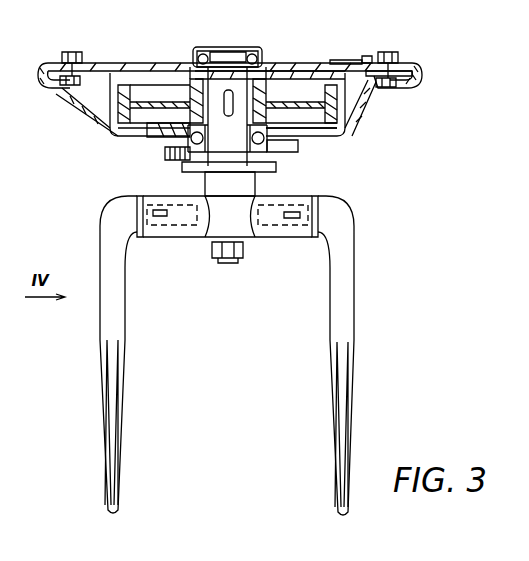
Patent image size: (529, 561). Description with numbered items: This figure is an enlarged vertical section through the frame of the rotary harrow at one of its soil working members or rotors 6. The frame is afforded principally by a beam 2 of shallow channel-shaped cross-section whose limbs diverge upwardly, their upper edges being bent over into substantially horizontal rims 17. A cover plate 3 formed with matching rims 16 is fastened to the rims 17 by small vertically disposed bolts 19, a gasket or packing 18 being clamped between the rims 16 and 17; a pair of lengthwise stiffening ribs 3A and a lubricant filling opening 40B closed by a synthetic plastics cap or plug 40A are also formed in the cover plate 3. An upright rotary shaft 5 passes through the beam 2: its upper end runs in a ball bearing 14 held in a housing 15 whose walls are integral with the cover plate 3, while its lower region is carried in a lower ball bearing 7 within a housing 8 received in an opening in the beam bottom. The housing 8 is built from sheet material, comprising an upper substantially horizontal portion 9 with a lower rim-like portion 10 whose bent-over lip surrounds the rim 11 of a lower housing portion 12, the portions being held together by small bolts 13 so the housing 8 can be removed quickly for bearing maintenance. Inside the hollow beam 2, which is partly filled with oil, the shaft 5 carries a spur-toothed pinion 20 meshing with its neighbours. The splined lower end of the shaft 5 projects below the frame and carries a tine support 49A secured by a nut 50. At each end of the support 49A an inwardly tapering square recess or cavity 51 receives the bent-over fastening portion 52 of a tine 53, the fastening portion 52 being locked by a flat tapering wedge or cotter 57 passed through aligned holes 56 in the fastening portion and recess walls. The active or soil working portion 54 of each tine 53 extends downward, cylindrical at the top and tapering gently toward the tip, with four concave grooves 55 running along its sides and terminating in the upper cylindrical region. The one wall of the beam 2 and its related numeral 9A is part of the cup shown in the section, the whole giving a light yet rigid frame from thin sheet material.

The beam 2 is at (96, 116).
The cover plate 3 is at (178, 63).
The stiffening ribs 3A is at (308, 63).
The rotary shaft 5 is at (262, 100).
The soil working member or rotor 6 is at (197, 246).
The lower ball bearing 7 is at (212, 146).
The housing 8 is at (300, 153).
The upper substantially horizontal portion 9 is at (190, 110).
The housing cup 9A is at (146, 71).
The lower substantially horizontal rim-like portion 10 is at (160, 137).
The substantially horizontal rim 11 is at (284, 152).
The housing portion 12 is at (274, 170).
The bolts 13 is at (167, 156).
The ball bearing 14 is at (202, 52).
The housing 15 is at (246, 48).
The rims 16 is at (420, 84).
The rims 17 is at (82, 90).
The gasket or packing 18 is at (416, 68).
The bolts 19 is at (72, 52).
The pinion 20 is at (122, 71).
The cap or plug 40A is at (344, 60).
The lubricant filling opening 40B is at (370, 58).
The tine support 49A is at (318, 202).
The nut 50 is at (240, 264).
The recesses or cavities 51 is at (168, 240).
The fastening portion 52 is at (134, 204).
The tine 53 is at (94, 358).
The active or soil working portion 54 is at (340, 396).
The grooves 55 is at (112, 408).
The holes 56 is at (160, 210).
The wedges or cotters 57 is at (292, 226).